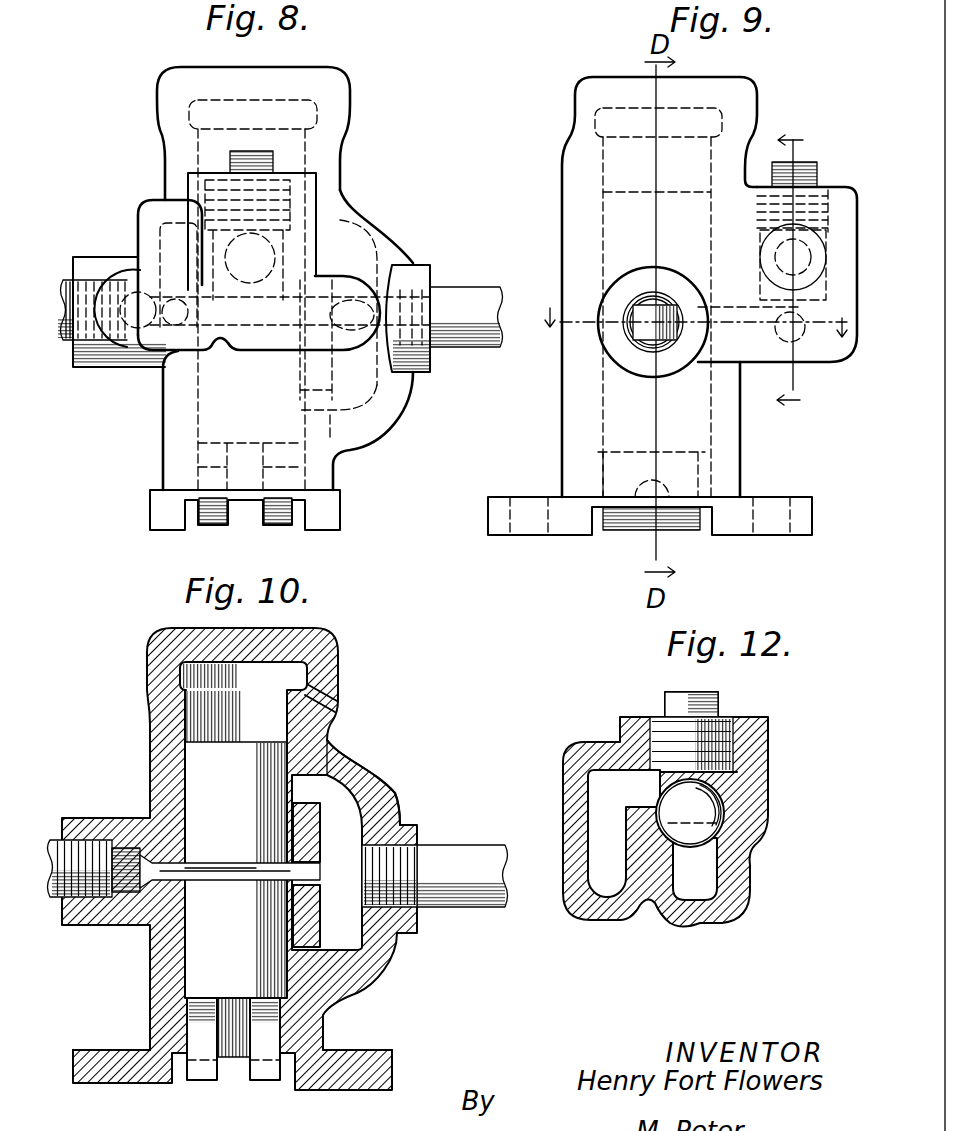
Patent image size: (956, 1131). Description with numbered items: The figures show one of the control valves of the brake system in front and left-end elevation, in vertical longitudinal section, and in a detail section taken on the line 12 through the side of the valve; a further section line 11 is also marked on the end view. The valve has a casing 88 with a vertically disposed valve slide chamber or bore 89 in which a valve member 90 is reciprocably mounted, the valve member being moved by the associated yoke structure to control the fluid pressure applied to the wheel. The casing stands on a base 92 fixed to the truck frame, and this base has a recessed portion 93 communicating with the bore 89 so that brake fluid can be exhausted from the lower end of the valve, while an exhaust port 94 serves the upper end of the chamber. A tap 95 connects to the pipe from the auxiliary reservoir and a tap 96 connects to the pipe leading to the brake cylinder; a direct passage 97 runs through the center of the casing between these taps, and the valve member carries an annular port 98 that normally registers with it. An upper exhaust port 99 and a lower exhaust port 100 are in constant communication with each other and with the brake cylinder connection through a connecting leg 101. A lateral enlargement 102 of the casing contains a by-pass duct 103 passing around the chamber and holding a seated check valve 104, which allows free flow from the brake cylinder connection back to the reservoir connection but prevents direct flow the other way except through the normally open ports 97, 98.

In FIG. 9, the section line 11- 11 is at (683, 336).
In FIG. 9, the section line 12— 12 is at (796, 272).
In FIG. 8, the casing 88 is at (166, 414).
In FIG. 9, the casing 88 is at (730, 460).
In FIG. 10, the casing 88 is at (160, 1012).
In FIG. 8, the valve slide chamber or bore 89 is at (300, 430).
In FIG. 9, the valve slide chamber or bore 89 is at (598, 172).
In FIG. 10, the valve slide chamber or bore 89 is at (330, 730).
In FIG. 8, the valve member 90 is at (318, 182).
In FIG. 9, the valve member 90 is at (615, 210).
In FIG. 10, the valve member 90 is at (236, 844).
In FIG. 8, the base 92 is at (160, 508).
In FIG. 9, the base 92 is at (498, 507).
In FIG. 10, the base 92 is at (377, 1067).
In FIG. 8, the recessed portion 93 is at (190, 520).
In FIG. 10, the recessed portion 93 is at (320, 1050).
In FIG. 8, the exhaust port 94 is at (308, 128).
In FIG. 10, the exhaust port 94 is at (340, 667).
In FIG. 8, the tap 95 is at (73, 277).
In FIG. 9, the tap 95 is at (647, 323).
In FIG. 10, the tap 95 is at (90, 837).
In FIG. 8, the tap 96 is at (433, 290).
In FIG. 10, the tap 96 is at (420, 843).
In FIG. 10, the direct passage 97 is at (305, 876).
In FIG. 8, the annular port 98 is at (283, 350).
In FIG. 9, the annular port 98 is at (640, 330).
In FIG. 10, the annular port 98 is at (232, 860).
In FIG. 8, the upper exhaust port 99 is at (295, 202).
In FIG. 10, the upper exhaust port 99 is at (327, 780).
In FIG. 8, the lower exhaust port 100 is at (313, 400).
In FIG. 10, the lower exhaust port 100 is at (300, 952).
In FIG. 8, the connecting leg 101 is at (360, 233).
In FIG. 10, the connecting leg 101 is at (345, 818).
In FIG. 8, the lateral enlargement 102 is at (300, 378).
In FIG. 9, the lateral enlargement 102 is at (807, 353).
In FIG. 12, the lateral enlargement 102 is at (740, 835).
In FIG. 9, the by-pass duct 103 is at (727, 295).
In FIG. 12, the by-pass duct 103 is at (687, 892).
In FIG. 8, the check valve 104 is at (185, 200).
In FIG. 9, the check valve 104 is at (777, 240).
In FIG. 12, the check valve 104 is at (702, 798).